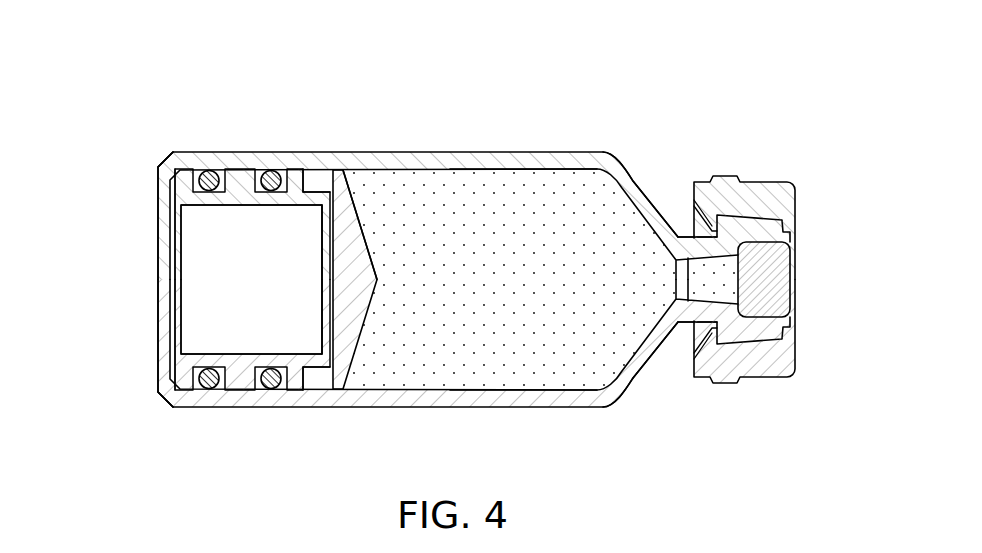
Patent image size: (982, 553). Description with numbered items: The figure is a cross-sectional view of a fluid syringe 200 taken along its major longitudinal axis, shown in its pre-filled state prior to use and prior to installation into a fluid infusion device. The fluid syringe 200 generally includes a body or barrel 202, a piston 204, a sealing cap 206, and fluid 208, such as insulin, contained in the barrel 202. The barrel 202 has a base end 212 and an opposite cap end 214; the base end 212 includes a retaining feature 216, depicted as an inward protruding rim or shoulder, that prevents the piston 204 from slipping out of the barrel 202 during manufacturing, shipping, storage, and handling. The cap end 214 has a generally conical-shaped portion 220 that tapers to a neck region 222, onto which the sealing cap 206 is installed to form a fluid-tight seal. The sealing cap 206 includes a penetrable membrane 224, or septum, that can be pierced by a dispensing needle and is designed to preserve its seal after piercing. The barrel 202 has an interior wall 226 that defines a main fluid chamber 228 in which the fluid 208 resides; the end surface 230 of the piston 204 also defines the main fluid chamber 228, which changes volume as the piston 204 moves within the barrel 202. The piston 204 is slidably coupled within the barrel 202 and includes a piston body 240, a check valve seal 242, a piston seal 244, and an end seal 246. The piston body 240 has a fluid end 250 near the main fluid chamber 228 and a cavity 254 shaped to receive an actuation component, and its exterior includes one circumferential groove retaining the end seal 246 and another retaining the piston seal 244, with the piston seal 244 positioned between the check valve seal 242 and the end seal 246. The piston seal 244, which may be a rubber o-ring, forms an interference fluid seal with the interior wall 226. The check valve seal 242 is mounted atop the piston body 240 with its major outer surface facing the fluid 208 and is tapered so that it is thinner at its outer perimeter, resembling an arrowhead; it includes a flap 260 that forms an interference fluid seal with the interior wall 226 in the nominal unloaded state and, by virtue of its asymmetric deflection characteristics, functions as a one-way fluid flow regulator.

The fluid syringe 200 is at (381, 92).
The barrel 202 is at (432, 152).
The piston 204 is at (191, 228).
The sealing cap 206 is at (757, 378).
The fluid 208 is at (537, 290).
The base end 212 is at (153, 155).
The cap end 214 is at (679, 184).
The retaining feature 216 is at (158, 164).
The conical-shaped portion 220 is at (625, 152).
The neck region 222 is at (683, 323).
The penetrable membrane 224 is at (781, 283).
The interior wall 226 is at (551, 170).
The main fluid chamber 228 is at (471, 354).
The end surface 230 is at (368, 308).
The piston body 240 is at (246, 353).
The check valve seal 242 is at (361, 230).
The piston seal 244 is at (271, 170).
The end seal 246 is at (209, 170).
The fluid end 250 is at (322, 277).
The cavity 254 is at (270, 247).
The flap 260 is at (322, 170).